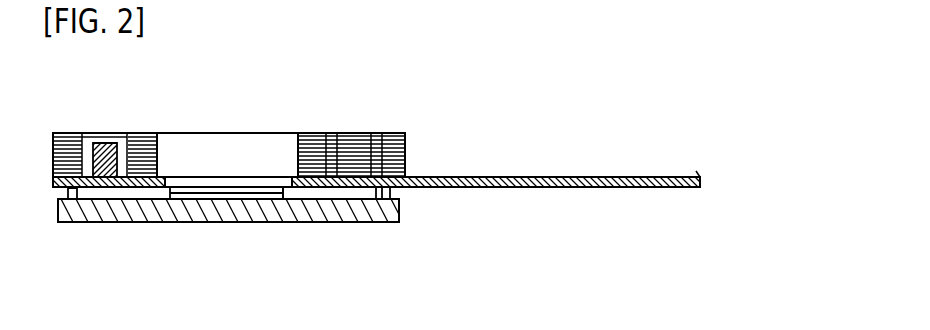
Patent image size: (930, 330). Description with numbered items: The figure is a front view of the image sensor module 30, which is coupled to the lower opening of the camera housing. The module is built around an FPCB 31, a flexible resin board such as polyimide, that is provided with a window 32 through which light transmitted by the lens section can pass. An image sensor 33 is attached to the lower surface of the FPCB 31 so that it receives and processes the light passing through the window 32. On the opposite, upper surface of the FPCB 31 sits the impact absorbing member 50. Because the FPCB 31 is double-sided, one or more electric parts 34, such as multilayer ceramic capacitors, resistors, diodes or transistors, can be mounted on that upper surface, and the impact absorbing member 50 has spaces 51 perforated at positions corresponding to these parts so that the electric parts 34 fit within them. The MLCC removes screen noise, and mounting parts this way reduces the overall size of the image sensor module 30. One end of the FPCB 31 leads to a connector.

The image sensor module 30 is at (374, 188).
The FPCB 31 is at (563, 187).
The window 32 is at (232, 177).
The image sensor 33 is at (278, 226).
The electric parts 34 is at (88, 160).
The impact absorbing member 50 is at (293, 116).
The spaces 51 is at (107, 138).